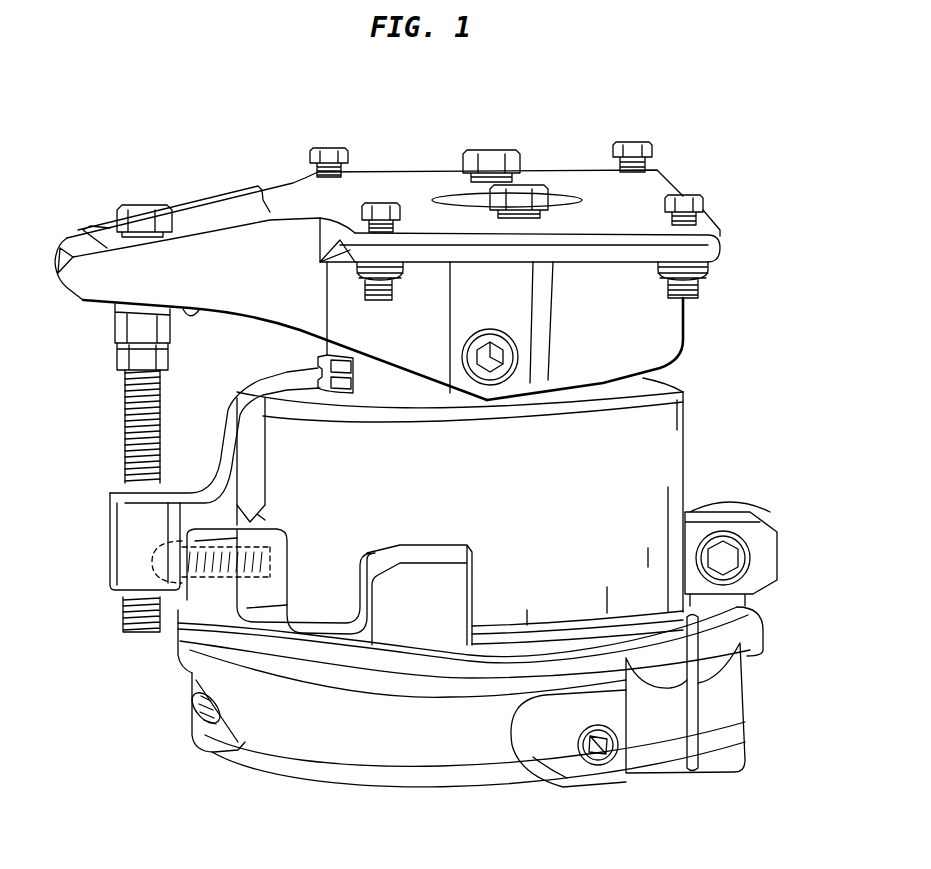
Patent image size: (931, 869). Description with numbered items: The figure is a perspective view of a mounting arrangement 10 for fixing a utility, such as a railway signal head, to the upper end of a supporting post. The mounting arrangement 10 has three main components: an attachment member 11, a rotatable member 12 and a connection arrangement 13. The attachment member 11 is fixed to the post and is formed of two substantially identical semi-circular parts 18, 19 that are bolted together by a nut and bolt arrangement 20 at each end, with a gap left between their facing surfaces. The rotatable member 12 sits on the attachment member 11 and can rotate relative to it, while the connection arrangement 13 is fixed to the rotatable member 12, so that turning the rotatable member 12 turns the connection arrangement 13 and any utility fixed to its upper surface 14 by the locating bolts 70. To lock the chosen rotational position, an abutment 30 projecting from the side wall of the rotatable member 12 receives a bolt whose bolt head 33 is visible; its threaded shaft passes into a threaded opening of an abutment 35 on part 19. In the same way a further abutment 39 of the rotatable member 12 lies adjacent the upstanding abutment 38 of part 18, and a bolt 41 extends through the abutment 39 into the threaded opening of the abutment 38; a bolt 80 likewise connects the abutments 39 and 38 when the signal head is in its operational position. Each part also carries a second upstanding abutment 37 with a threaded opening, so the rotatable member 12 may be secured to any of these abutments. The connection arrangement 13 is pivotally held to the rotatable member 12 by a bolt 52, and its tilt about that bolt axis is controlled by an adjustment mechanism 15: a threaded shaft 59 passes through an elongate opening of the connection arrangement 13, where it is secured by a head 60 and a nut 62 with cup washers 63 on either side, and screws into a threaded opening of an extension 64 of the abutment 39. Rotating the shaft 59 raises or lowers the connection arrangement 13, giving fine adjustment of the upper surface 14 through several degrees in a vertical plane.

The mounting arrangement 10 is at (690, 160).
The attachment member 11 is at (368, 738).
The rotatable member 12 is at (456, 479).
The connection arrangement 13 is at (665, 318).
The upper surface 14 is at (604, 206).
The adjustment mechanism 15 is at (137, 423).
The semi-circular part 18 is at (440, 762).
The semi-circular part 19 is at (757, 638).
The nut and bolt arrangement 20 is at (603, 765).
The abutment 30 is at (750, 540).
The bolt head 33 is at (737, 558).
The abutment 35 is at (715, 512).
The upstanding abutment 37 is at (470, 591).
The upstanding abutment 38 is at (200, 622).
The further abutment 39 is at (201, 521).
The bolt 41 is at (272, 582).
The bolt 52 is at (487, 345).
The threaded shaft 59 is at (160, 438).
The head 60 is at (135, 214).
The nut 62 is at (168, 338).
The cup washers 63 is at (90, 234).
The extension 64 is at (110, 530).
The locating bolts 70 is at (342, 148).
The bolt 80 is at (275, 545).